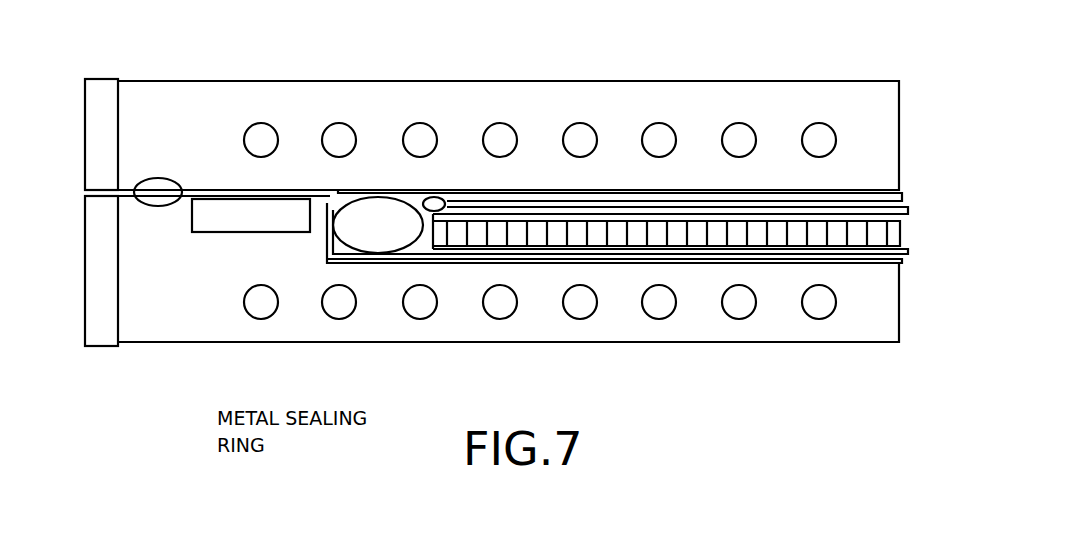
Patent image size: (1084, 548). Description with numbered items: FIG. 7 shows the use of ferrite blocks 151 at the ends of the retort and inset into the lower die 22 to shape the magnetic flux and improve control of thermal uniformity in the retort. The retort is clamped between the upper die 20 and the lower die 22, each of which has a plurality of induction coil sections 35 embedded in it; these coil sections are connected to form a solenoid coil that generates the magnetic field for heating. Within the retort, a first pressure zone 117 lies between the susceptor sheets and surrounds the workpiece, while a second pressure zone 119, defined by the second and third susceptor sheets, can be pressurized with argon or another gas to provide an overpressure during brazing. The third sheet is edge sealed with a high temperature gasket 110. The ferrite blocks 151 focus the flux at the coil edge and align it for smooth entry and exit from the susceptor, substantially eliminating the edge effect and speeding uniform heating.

The upper die 20 is at (812, 81).
The lower die 22 is at (792, 342).
The induction coil sections 35 is at (565, 132).
The high temperature gasket 110 is at (151, 178).
The first pressure zone 117 is at (473, 238).
The second pressure zone 119 is at (602, 205).
The ferrite blocks 151 is at (238, 232).